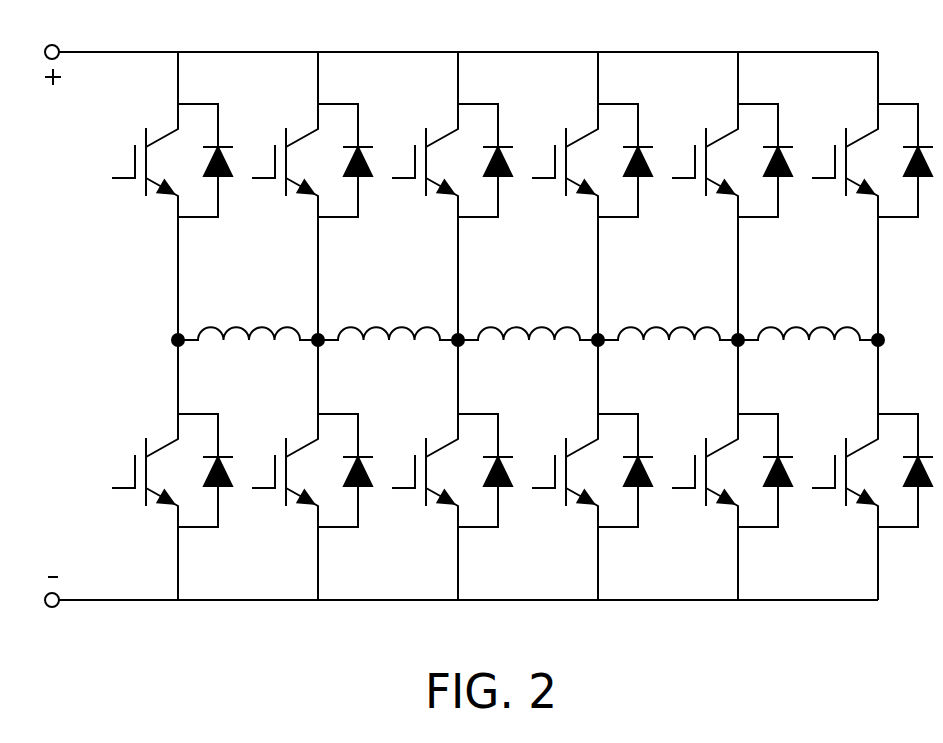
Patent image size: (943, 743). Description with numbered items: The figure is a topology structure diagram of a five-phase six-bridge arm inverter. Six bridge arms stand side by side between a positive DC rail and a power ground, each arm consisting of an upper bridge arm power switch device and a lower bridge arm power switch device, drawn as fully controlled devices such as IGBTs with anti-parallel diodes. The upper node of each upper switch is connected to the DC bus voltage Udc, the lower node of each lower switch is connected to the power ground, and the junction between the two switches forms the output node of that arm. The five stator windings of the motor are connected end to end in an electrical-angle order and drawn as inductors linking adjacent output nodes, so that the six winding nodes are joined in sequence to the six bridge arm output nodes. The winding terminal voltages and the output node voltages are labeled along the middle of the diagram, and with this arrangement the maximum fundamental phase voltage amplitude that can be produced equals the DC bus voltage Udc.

The DC bus voltage Udc is at (457, 326).